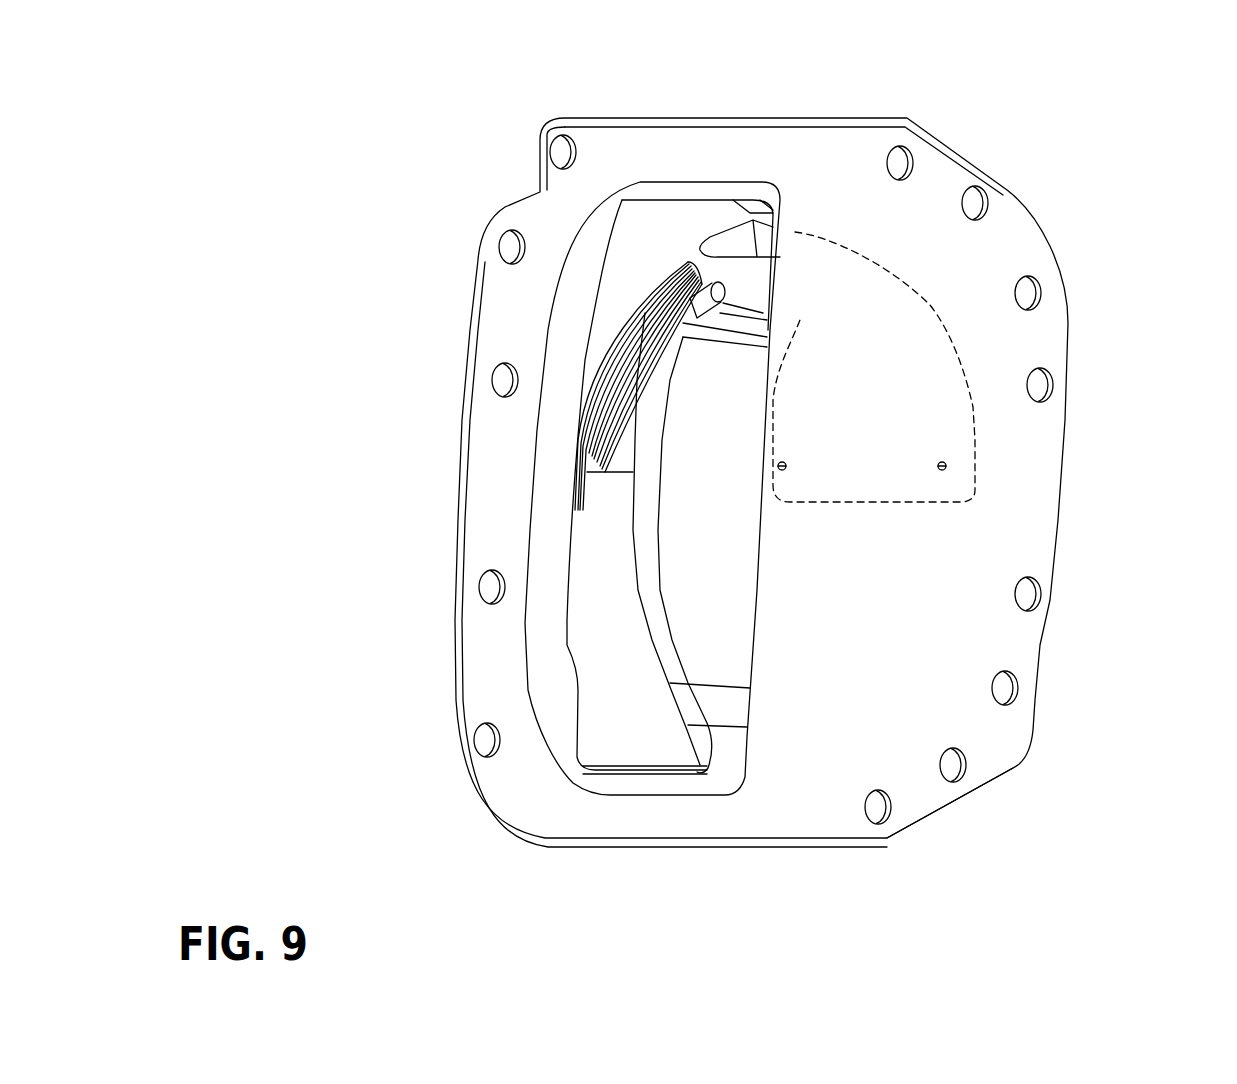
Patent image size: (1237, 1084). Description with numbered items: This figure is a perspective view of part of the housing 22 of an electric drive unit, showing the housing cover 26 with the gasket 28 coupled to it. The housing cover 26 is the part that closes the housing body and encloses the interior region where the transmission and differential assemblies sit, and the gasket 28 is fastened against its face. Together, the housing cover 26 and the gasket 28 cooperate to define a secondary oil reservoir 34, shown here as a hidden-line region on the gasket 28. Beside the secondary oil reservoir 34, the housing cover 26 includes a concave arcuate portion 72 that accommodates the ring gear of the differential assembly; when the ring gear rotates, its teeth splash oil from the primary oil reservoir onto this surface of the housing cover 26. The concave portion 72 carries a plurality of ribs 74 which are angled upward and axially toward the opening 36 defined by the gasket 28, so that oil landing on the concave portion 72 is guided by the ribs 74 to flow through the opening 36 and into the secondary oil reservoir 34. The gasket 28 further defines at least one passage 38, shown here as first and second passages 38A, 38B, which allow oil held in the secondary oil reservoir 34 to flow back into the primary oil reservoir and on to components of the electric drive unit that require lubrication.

The housing 22 is at (1005, 121).
The housing cover 26 is at (680, 548).
The gasket 28 is at (937, 605).
The secondary oil reservoir 34 is at (955, 337).
The opening 36 is at (746, 272).
The passage 38 is at (1000, 486).
The first passage 38A is at (786, 469).
The second passage 38B is at (946, 468).
The concave arcuate portion 72 is at (610, 500).
The ribs 74 is at (660, 298).